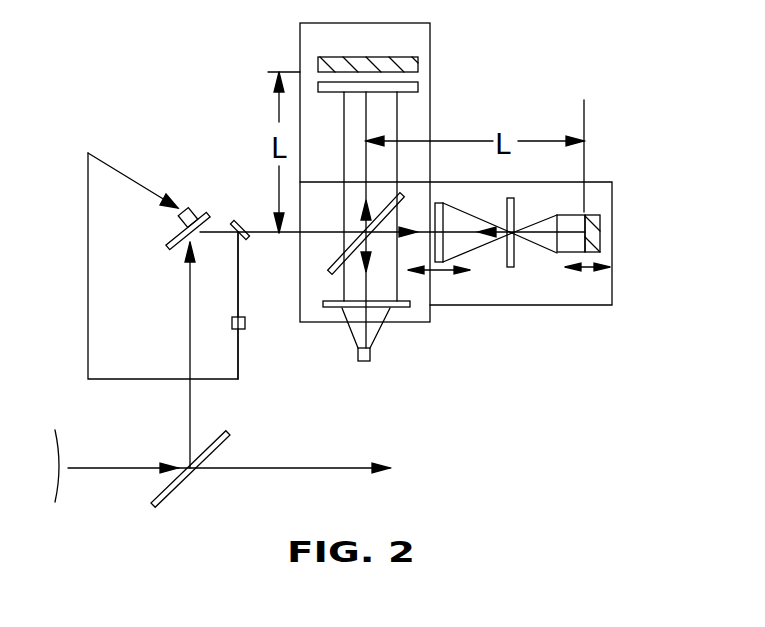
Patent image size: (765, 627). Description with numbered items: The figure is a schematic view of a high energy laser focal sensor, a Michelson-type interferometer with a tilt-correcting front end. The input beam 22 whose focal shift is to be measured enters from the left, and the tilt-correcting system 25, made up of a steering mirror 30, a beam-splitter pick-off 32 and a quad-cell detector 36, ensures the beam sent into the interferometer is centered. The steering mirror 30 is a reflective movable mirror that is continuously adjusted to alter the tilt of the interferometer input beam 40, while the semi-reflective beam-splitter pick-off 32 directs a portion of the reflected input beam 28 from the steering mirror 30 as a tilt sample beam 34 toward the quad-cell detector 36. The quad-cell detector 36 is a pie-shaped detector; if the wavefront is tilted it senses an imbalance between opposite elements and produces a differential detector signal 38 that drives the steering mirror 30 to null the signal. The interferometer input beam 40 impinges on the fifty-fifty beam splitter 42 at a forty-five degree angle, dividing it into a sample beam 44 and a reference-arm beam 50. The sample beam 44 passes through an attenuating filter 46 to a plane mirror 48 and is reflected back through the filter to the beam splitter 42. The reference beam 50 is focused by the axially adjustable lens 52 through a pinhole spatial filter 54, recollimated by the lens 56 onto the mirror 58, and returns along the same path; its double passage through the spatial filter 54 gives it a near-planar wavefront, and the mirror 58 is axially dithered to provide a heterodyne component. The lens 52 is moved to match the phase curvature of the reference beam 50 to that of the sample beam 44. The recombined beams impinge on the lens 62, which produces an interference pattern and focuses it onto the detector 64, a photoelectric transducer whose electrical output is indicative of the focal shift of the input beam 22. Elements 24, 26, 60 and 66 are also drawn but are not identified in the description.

The input beam 22 is at (78, 468).
The beam splitter 24 is at (153, 508).
The tilt-correcting system 25 is at (191, 196).
The transmitted beam 26 is at (268, 468).
The reflected input beam 28 is at (190, 413).
The steering mirror 30 is at (168, 247).
The beam-splitter pick-off 32 is at (246, 240).
The tilt sample beam 34 is at (238, 296).
The quad-cell detector 36 is at (236, 329).
The differential detector signal 38 is at (88, 288).
The interferometer input beam 40 is at (258, 231).
The 50-50 beam splitter 42 is at (330, 275).
The sample beam 44 is at (364, 124).
The attenuating filter 46 is at (418, 88).
The plane mirror 48 is at (418, 60).
The reference-arm beam 50 is at (404, 196).
The lens 52 is at (440, 203).
The pinhole spatial filter 54 is at (514, 201).
The lens 56 is at (557, 253).
The mirror 58 is at (602, 212).
The lens 60 is at (372, 285).
The lens 62 is at (318, 307).
The detector 64 is at (372, 360).
The housing 66 is at (575, 305).